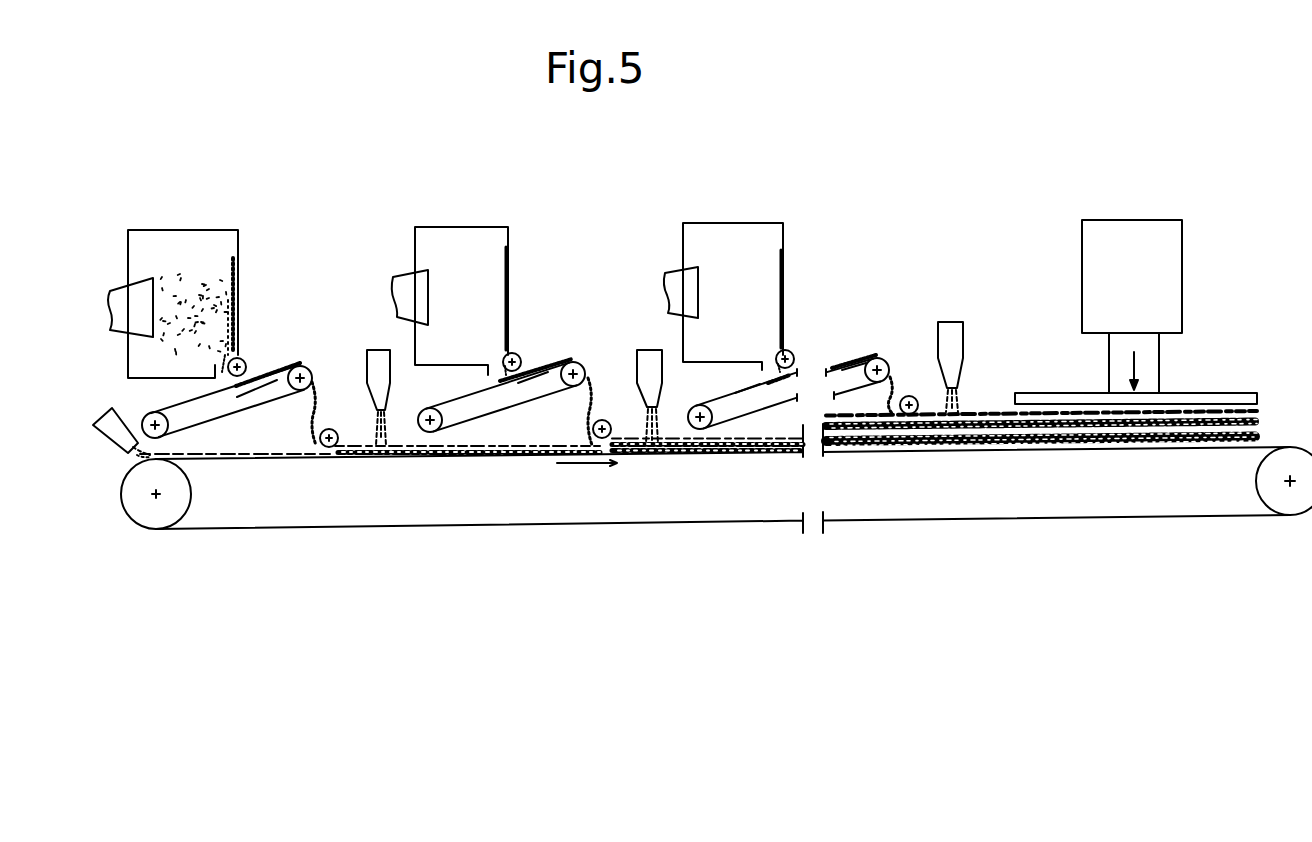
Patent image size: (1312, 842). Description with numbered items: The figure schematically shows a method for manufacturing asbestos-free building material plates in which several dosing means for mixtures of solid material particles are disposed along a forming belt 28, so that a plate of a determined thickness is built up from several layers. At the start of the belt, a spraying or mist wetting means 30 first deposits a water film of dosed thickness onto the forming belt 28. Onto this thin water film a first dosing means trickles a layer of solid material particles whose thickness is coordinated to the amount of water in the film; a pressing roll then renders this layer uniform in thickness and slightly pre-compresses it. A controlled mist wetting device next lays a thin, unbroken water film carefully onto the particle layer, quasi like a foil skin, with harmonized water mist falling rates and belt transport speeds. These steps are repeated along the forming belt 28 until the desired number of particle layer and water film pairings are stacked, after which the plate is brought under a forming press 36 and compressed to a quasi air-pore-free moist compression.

The forming belt 28 is at (272, 530).
The spraying or mist wetting means 30 is at (112, 423).
The forming press 36 is at (1128, 232).